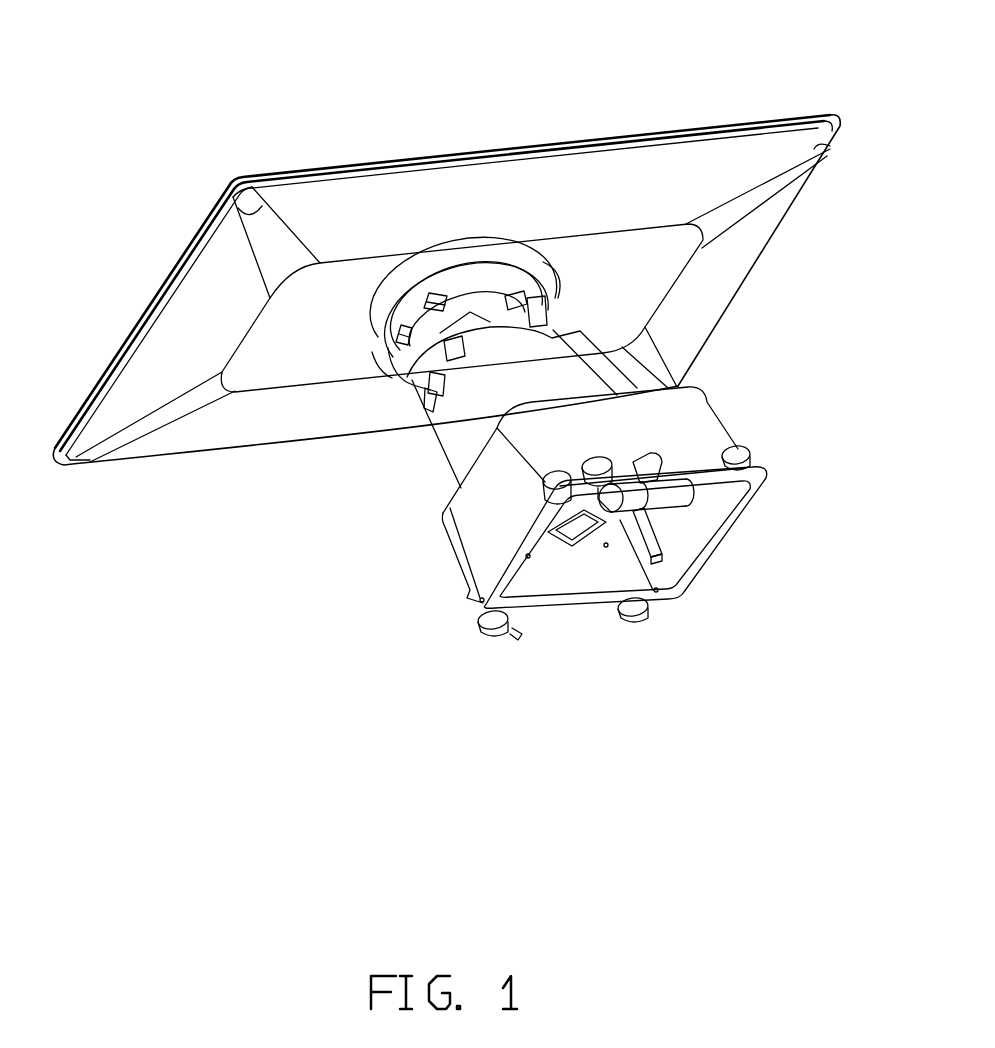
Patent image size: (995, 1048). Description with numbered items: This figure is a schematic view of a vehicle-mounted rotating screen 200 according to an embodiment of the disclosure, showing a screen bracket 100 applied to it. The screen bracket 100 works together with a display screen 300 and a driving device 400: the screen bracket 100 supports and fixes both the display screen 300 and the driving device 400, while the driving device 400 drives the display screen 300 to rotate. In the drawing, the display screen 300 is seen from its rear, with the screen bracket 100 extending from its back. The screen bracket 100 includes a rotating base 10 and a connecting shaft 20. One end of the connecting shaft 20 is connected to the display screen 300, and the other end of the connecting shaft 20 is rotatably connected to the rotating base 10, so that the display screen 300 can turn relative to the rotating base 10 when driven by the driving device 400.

The vehicle-mounted rotating screen 200 is at (514, 38).
The display screen 300 is at (482, 184).
The screen bracket 100 is at (320, 465).
The rotating base 10 is at (428, 412).
The connecting shaft 20 is at (571, 513).
The driving device 400 is at (641, 493).